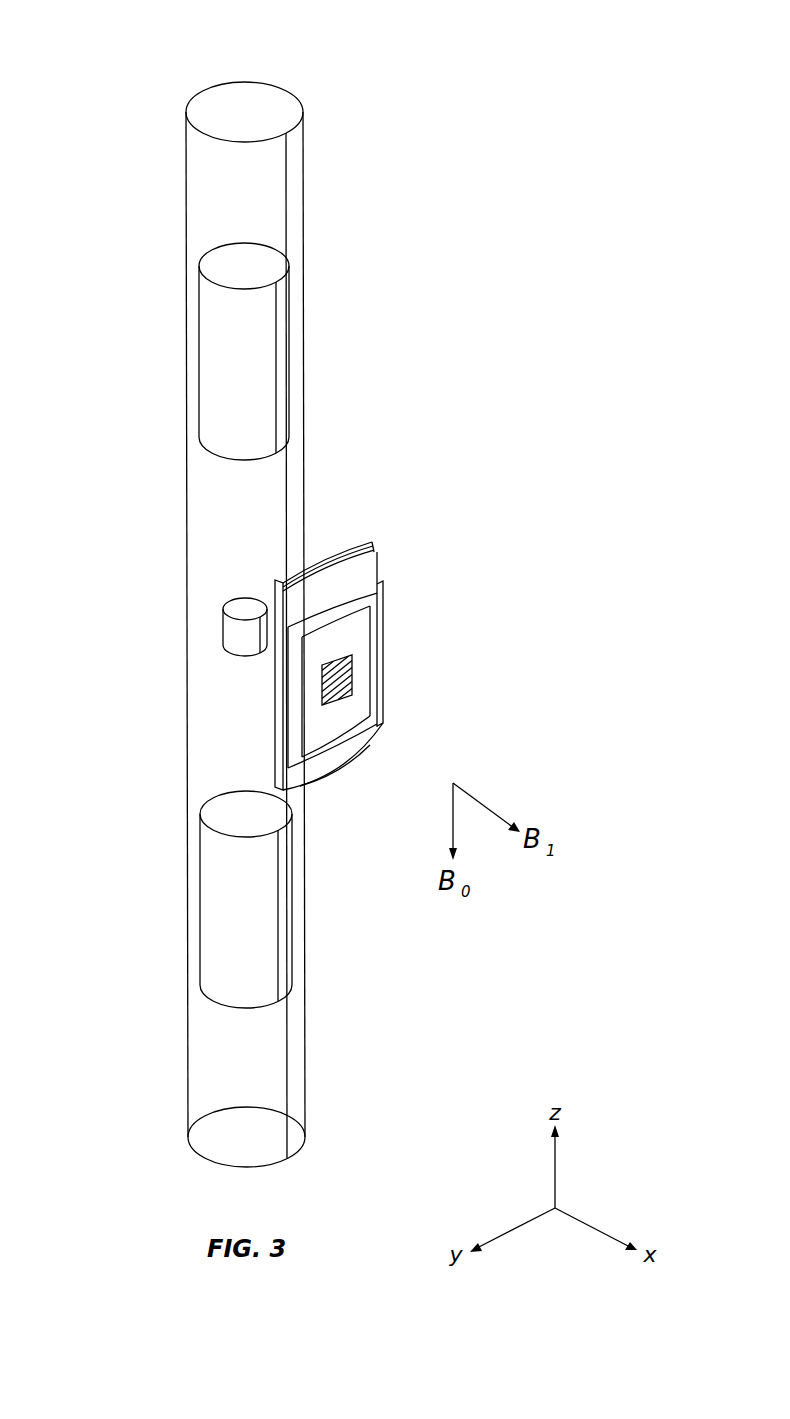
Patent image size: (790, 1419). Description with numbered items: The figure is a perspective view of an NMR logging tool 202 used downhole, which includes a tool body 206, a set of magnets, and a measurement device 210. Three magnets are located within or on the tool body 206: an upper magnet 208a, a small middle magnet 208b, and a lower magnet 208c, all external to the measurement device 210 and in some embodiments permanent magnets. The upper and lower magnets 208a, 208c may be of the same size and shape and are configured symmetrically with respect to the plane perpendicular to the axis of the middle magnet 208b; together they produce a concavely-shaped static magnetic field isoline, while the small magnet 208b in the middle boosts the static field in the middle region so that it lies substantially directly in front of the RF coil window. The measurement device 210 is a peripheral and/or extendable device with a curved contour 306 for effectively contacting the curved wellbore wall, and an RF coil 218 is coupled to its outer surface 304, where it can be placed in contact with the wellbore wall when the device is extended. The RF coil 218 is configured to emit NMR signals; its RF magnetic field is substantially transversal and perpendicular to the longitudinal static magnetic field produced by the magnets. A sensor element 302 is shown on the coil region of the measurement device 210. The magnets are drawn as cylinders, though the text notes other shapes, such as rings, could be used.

The sensor assembly 202 is at (458, 34).
The tool body 206 is at (293, 148).
The upper magnet 208a is at (217, 353).
The small middle magnet 208b is at (233, 633).
The lower magnet 208c is at (217, 890).
The measurement device 210 is at (369, 545).
The RF coil 218 is at (386, 592).
The magnetic field sensor element 302 is at (354, 677).
The outer surface 304 is at (325, 597).
The curved contour 306 is at (363, 750).